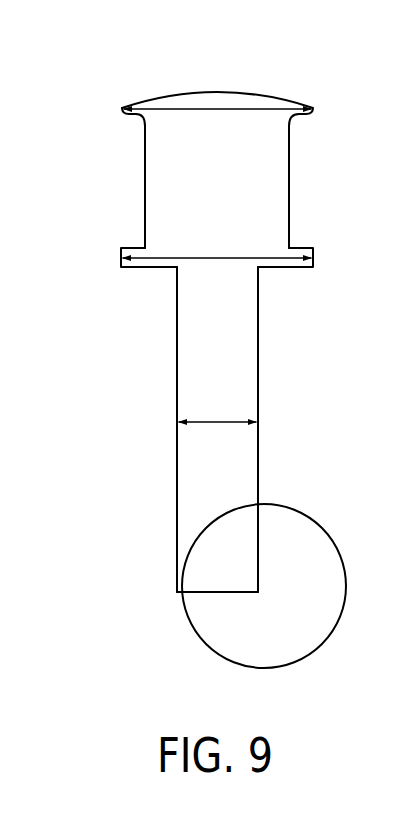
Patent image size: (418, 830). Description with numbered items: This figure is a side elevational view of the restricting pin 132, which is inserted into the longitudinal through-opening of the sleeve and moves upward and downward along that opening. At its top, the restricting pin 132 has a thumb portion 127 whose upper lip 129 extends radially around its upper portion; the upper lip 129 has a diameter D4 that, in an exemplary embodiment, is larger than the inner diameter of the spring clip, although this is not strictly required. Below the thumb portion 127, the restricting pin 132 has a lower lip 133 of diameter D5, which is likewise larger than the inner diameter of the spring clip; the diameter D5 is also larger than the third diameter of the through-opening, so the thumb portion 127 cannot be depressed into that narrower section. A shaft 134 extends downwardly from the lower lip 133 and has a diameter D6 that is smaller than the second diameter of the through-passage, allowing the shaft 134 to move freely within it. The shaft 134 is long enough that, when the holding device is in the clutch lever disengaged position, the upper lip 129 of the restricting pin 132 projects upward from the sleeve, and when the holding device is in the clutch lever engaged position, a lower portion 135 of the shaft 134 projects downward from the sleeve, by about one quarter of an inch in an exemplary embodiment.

The thumb portion 127 is at (90, 92).
The upper lip 129 is at (278, 93).
The restricting pin 132 is at (289, 182).
The lower lip 133 is at (133, 268).
The shaft 134 is at (176, 470).
The lower portion 135 is at (202, 595).
The diameter of upper lip D4 is at (194, 108).
The diameter of lower lip D5 is at (235, 258).
The diameter of shaft D6 is at (230, 422).